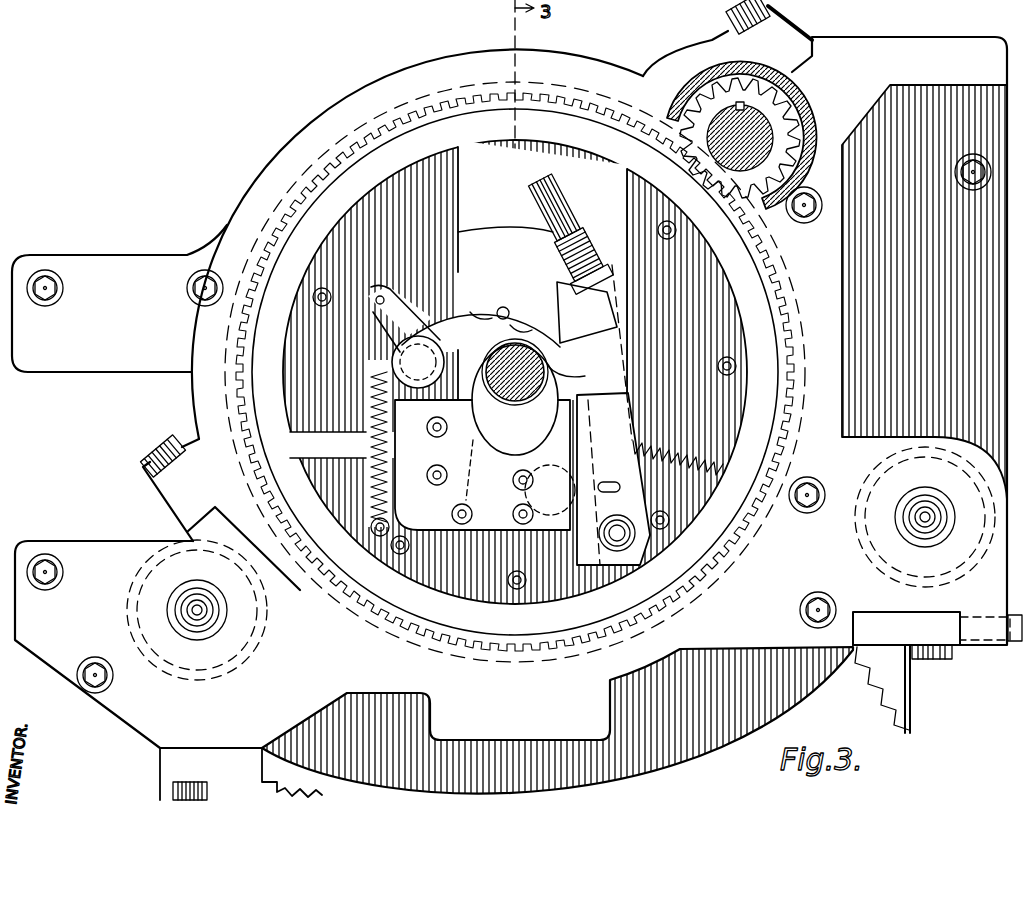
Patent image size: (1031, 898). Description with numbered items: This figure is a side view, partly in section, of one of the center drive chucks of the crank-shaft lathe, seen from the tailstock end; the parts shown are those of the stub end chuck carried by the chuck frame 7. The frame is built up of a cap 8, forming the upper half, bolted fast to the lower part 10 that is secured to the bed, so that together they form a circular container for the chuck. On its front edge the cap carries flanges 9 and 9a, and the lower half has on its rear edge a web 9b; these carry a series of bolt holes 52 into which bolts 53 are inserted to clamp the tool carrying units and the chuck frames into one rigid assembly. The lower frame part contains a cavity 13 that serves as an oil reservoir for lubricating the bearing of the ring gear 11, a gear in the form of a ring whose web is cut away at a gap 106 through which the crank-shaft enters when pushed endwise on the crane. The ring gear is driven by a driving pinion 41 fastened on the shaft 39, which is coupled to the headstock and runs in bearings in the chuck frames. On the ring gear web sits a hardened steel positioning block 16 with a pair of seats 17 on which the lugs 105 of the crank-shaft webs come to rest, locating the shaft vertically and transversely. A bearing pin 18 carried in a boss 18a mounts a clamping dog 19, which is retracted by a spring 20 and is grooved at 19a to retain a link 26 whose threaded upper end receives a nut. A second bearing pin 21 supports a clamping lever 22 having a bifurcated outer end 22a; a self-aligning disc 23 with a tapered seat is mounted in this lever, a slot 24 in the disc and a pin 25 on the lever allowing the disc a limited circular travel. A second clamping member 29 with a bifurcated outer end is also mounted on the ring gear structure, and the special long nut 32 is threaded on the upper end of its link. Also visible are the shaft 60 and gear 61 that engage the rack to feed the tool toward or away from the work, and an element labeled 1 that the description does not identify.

The base bracket 1 is at (903, 700).
The chuck frame 7 is at (448, 72).
The cap 8 is at (242, 213).
The flange 9 is at (122, 262).
The flange 9a is at (73, 553).
The web 9b is at (907, 110).
The lower part of chuck frame 10 is at (170, 733).
The ring gear 11 is at (540, 95).
The cavity 13 is at (577, 708).
The positioning block 16 is at (440, 492).
The seats 17 is at (473, 445).
The bearing pin 18 is at (555, 495).
The boss 18a is at (608, 541).
The clamping dog 19 is at (659, 458).
The groove 19a is at (573, 417).
The spring 20 is at (620, 530).
The second bearing pin 21 is at (425, 343).
The clamping lever 22 is at (495, 268).
The bifurcated outer end 22a is at (607, 280).
The self-aligning disc 23 is at (503, 306).
The slot 24 is at (520, 308).
The pin 25 is at (474, 307).
The link 26 is at (590, 383).
The second clamping member 29 is at (480, 240).
The special long nut 32 is at (557, 200).
The shaft 39 is at (785, 112).
The driving pinion 41 is at (778, 143).
The bolt holes 52 is at (183, 290).
The bolts 53 is at (103, 680).
The shaft 60 is at (207, 627).
The gear 61 is at (561, 563).
The lugs 105 is at (550, 428).
The gap 106 is at (538, 155).